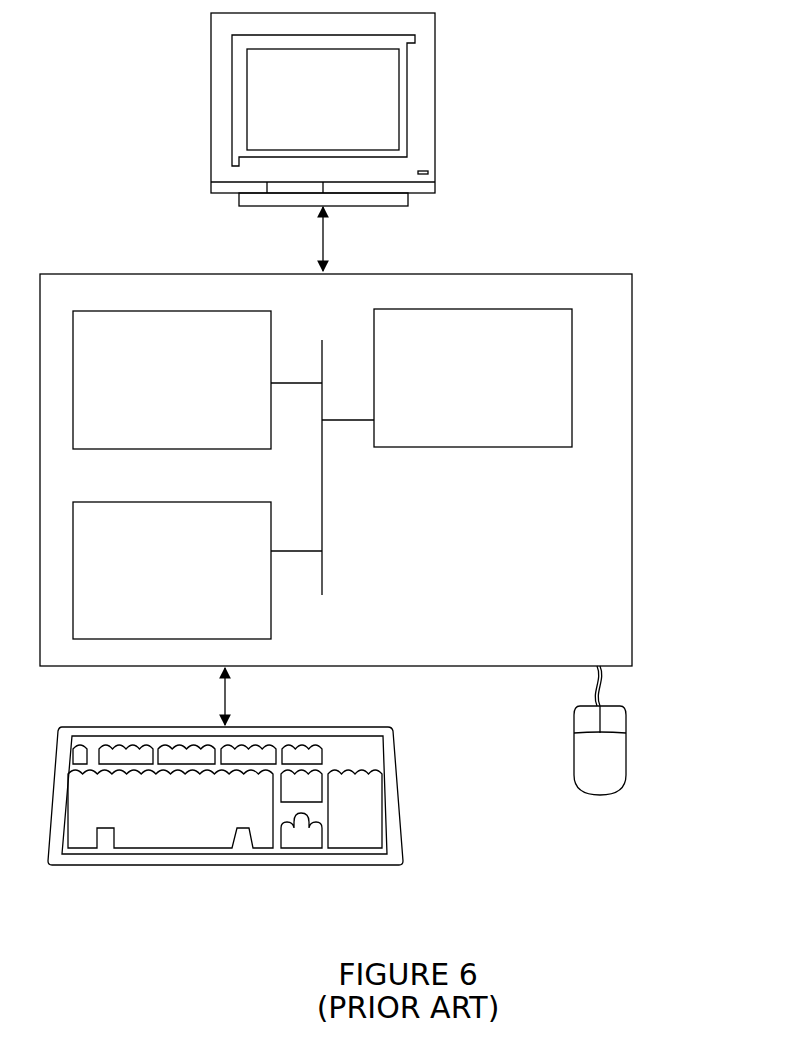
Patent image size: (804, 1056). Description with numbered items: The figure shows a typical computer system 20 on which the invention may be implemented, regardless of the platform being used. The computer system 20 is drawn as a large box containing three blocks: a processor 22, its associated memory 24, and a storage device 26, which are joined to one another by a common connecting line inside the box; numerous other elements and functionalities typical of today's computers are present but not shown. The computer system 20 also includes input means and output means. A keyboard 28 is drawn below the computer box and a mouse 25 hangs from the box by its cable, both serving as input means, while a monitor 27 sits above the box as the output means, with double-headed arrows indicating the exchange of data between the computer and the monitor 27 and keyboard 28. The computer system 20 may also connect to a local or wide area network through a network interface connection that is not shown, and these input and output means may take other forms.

The computer system 20 is at (646, 148).
The processor 22 is at (457, 392).
The memory 24 is at (160, 391).
The mouse 25 is at (587, 771).
The storage device 26 is at (157, 581).
The monitor 27 is at (310, 113).
The keyboard 28 is at (176, 819).